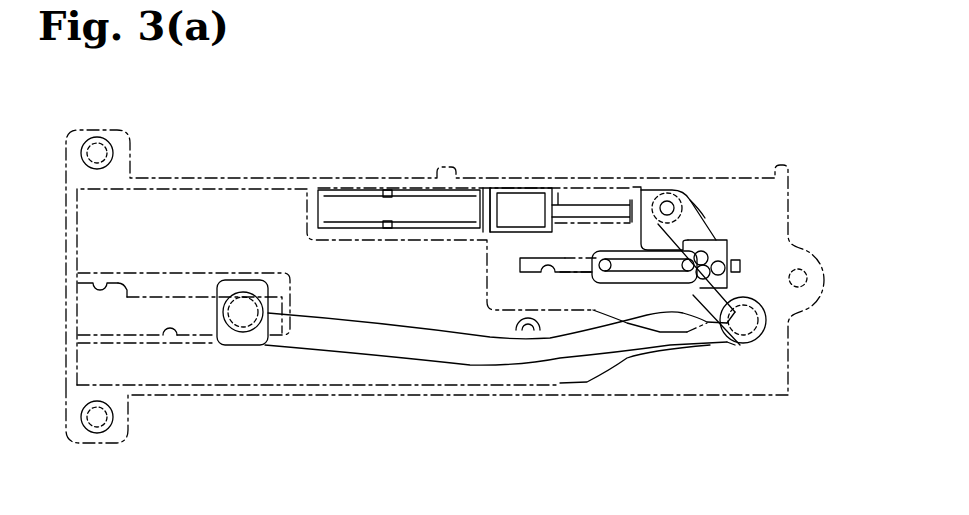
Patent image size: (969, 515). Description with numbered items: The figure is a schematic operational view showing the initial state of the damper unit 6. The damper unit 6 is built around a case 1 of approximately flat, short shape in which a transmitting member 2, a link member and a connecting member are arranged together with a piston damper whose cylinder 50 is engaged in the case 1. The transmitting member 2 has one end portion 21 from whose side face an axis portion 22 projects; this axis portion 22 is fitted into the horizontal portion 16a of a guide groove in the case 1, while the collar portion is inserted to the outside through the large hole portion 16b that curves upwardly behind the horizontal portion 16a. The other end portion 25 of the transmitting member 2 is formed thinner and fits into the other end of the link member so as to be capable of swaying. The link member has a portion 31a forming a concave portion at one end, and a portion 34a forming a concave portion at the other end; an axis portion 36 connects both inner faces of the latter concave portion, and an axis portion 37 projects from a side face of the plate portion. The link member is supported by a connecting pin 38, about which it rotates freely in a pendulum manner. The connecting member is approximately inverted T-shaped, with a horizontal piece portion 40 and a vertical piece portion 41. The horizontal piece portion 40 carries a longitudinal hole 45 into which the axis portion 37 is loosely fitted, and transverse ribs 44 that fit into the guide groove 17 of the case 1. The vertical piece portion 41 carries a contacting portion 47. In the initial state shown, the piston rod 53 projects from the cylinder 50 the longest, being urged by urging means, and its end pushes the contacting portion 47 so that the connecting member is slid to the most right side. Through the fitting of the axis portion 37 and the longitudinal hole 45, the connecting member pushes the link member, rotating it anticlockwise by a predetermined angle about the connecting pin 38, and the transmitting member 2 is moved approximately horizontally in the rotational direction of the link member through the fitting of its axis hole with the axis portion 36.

The damper unit 6 is at (255, 160).
The case 1 is at (302, 176).
The horizontal portion 16a is at (180, 336).
The large hole portion 16b is at (112, 285).
The one end portion 21 is at (245, 347).
The axis portion 22 is at (250, 325).
The transmitting member 2 is at (472, 374).
The cylinder 50 is at (412, 207).
The piston rod 53 is at (575, 204).
The contacting portion 47 is at (622, 196).
The vertical piece portion 41 is at (648, 188).
The connecting pin 38 is at (668, 205).
The portion forming a concave portion 31a is at (705, 205).
The longitudinal hole 45 is at (720, 247).
The axis portion 37 is at (733, 250).
The horizontal piece portion 40 is at (728, 262).
The transverse ribs 44 is at (627, 259).
The guide groove 17 is at (553, 278).
The axis portion 36 is at (768, 332).
The other end portion 25 is at (720, 350).
The portion forming a concave portion 34a is at (741, 346).